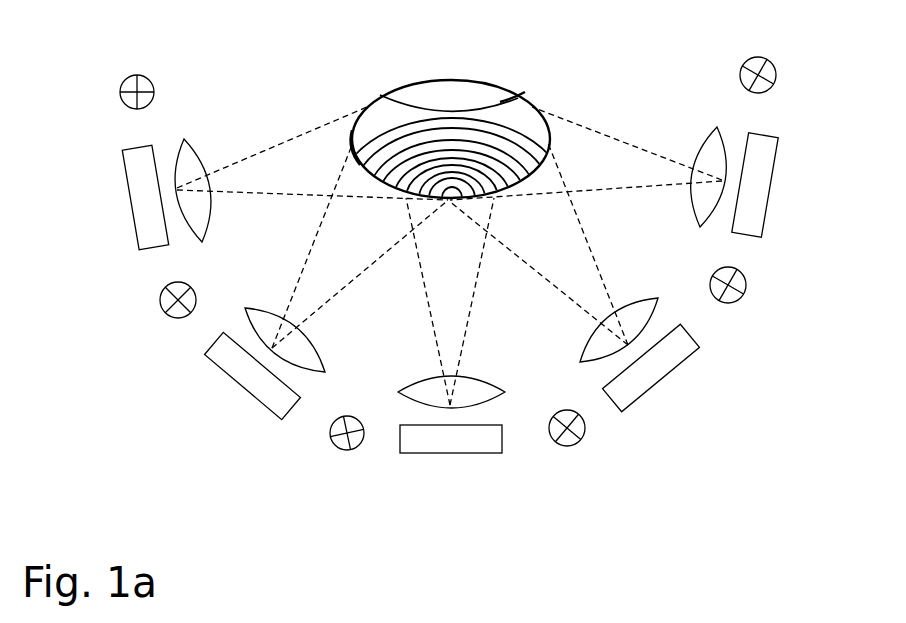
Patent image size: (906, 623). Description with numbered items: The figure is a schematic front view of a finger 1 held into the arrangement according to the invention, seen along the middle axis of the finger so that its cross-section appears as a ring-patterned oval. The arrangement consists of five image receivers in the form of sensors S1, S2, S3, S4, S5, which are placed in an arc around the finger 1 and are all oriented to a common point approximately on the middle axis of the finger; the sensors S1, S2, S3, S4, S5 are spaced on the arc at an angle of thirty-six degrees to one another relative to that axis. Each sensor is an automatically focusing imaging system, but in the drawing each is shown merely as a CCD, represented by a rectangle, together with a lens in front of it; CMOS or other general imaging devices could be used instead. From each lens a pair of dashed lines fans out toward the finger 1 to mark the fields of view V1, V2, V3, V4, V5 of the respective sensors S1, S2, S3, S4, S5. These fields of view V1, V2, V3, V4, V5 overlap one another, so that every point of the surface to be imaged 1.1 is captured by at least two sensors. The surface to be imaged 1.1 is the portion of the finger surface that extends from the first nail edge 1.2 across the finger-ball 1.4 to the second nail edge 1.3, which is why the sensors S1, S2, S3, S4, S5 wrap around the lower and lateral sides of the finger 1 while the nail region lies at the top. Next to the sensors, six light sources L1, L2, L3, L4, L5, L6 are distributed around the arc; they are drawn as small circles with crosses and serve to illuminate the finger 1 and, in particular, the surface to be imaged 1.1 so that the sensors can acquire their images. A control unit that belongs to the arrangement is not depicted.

The finger 1 is at (540, 115).
The surface to be imaged 1.1 is at (351, 143).
The first nail edge 1.2 is at (383, 97).
The second nail edge 1.3 is at (513, 98).
The finger-ball 1.4 is at (518, 127).
The sensor S1 is at (149, 194).
The sensor S2 is at (265, 370).
The sensor S3 is at (451, 442).
The sensor S4 is at (644, 362).
The sensor S5 is at (756, 182).
The light source L1 is at (114, 91).
The light source L2 is at (160, 306).
The light source L3 is at (346, 457).
The light source L4 is at (577, 447).
The light source L5 is at (748, 295).
The light source L6 is at (779, 77).
The field of view V1 is at (312, 153).
The field of view V2 is at (359, 246).
The field of view V3 is at (450, 301).
The field of view V4 is at (538, 244).
The field of view V5 is at (586, 153).